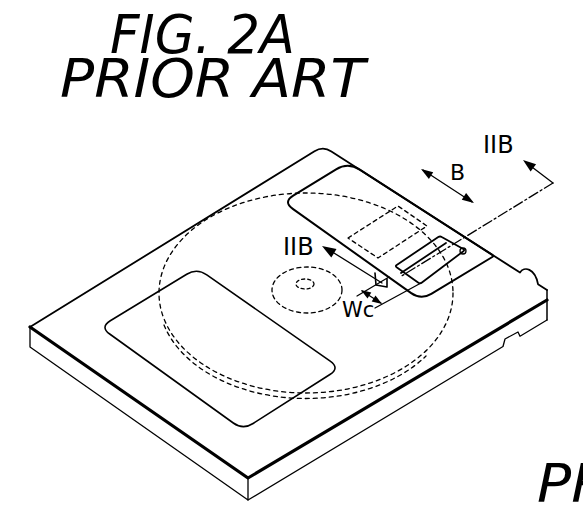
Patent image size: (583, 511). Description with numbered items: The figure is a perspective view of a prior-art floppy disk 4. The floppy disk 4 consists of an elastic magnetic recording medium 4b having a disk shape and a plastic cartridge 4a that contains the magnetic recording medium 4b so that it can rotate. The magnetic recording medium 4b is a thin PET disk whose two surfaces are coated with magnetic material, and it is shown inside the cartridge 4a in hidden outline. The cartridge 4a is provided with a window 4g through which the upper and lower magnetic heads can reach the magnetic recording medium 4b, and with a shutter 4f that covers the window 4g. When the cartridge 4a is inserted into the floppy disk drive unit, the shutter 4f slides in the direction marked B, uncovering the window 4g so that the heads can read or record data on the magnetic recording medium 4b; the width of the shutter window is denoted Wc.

The floppy disk 4 is at (150, 228).
The cartridge 4a is at (387, 407).
The magnetic recording medium 4b is at (218, 222).
The shutter 4f is at (385, 192).
The window 4g is at (470, 250).